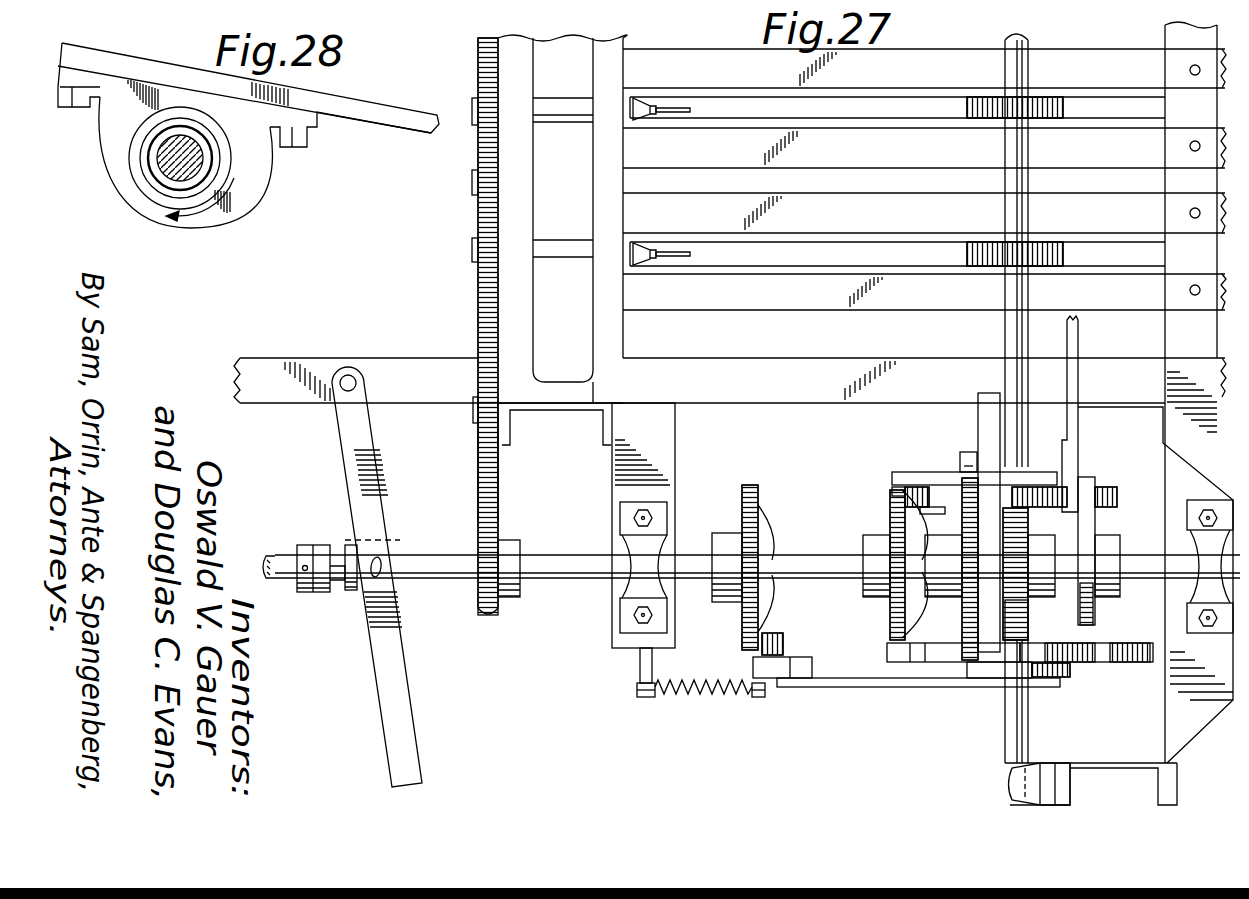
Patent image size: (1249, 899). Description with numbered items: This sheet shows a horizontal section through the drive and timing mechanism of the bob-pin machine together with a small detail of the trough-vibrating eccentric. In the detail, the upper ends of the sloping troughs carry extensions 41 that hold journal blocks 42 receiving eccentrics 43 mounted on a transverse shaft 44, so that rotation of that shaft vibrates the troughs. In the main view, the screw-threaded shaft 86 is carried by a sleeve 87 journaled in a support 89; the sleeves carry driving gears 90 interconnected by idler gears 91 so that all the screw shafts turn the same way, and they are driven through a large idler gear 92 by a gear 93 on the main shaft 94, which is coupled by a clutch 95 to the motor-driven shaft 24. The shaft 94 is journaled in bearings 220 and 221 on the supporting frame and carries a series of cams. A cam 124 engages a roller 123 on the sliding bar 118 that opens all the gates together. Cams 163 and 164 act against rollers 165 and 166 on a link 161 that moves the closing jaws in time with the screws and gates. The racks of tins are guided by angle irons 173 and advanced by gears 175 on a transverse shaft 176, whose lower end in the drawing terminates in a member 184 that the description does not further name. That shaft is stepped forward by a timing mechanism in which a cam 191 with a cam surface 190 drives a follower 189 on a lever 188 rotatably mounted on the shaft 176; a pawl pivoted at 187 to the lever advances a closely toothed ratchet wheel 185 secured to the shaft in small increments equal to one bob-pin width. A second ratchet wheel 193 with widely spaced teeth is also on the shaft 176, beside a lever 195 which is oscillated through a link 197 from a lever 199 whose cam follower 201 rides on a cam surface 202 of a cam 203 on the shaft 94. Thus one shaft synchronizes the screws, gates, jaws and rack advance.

In FIG. 27, the shaft 24 is at (276, 560).
In FIG. 28, the extensions 41 is at (355, 101).
In FIG. 28, the journal blocks 42 is at (247, 162).
In FIG. 28, the eccentrics 43 is at (157, 165).
In FIG. 28, the transverse shaft 44 is at (192, 172).
In FIG. 27, the shaft 86 is at (668, 107).
In FIG. 27, the sleeve 87 is at (637, 100).
In FIG. 27, the support 89 is at (610, 152).
In FIG. 27, the driving gears 90 is at (478, 89).
In FIG. 27, the idler gears 91 is at (478, 52).
In FIG. 27, the large idler gear 92 is at (478, 460).
In FIG. 27, the gear 93 is at (488, 615).
In FIG. 27, the shaft 94 is at (548, 584).
In FIG. 27, the clutch 95 is at (350, 592).
In FIG. 27, the bar 118 is at (1078, 342).
In FIG. 27, the roller 123 is at (1087, 480).
In FIG. 27, the cam 124 is at (1095, 527).
In FIG. 27, the link 161 is at (988, 392).
In FIG. 27, the cam 163 is at (965, 628).
In FIG. 27, the cam 164 is at (1022, 609).
In FIG. 27, the roller 165 is at (962, 452).
In FIG. 27, the roller 166 is at (1028, 628).
In FIG. 27, the angle irons 173 is at (923, 62).
In FIG. 27, the gears 175 is at (1063, 110).
In FIG. 27, the transverse shaft 176 is at (1028, 181).
In FIG. 27, the knob 184 is at (997, 784).
In FIG. 27, the ratchet wheel 185 is at (1117, 497).
In FIG. 27, the pivot 187 is at (946, 511).
In FIG. 27, the lever 188 is at (937, 472).
In FIG. 27, the follower 189 is at (900, 497).
In FIG. 27, the cam surface 190 is at (906, 578).
In FIG. 27, the cam 191 is at (890, 620).
In FIG. 27, the second ratchet wheel 193 is at (1085, 645).
In FIG. 27, the lever 195 is at (1070, 672).
In FIG. 27, the link 197 is at (866, 683).
In FIG. 27, the lever 199 is at (812, 663).
In FIG. 27, the cam follower 201 is at (784, 641).
In FIG. 27, the cam surface 202 is at (768, 590).
In FIG. 27, the cam 203 is at (748, 485).
In FIG. 27, the bearing 220 is at (635, 545).
In FIG. 27, the bearing 221 is at (1190, 590).